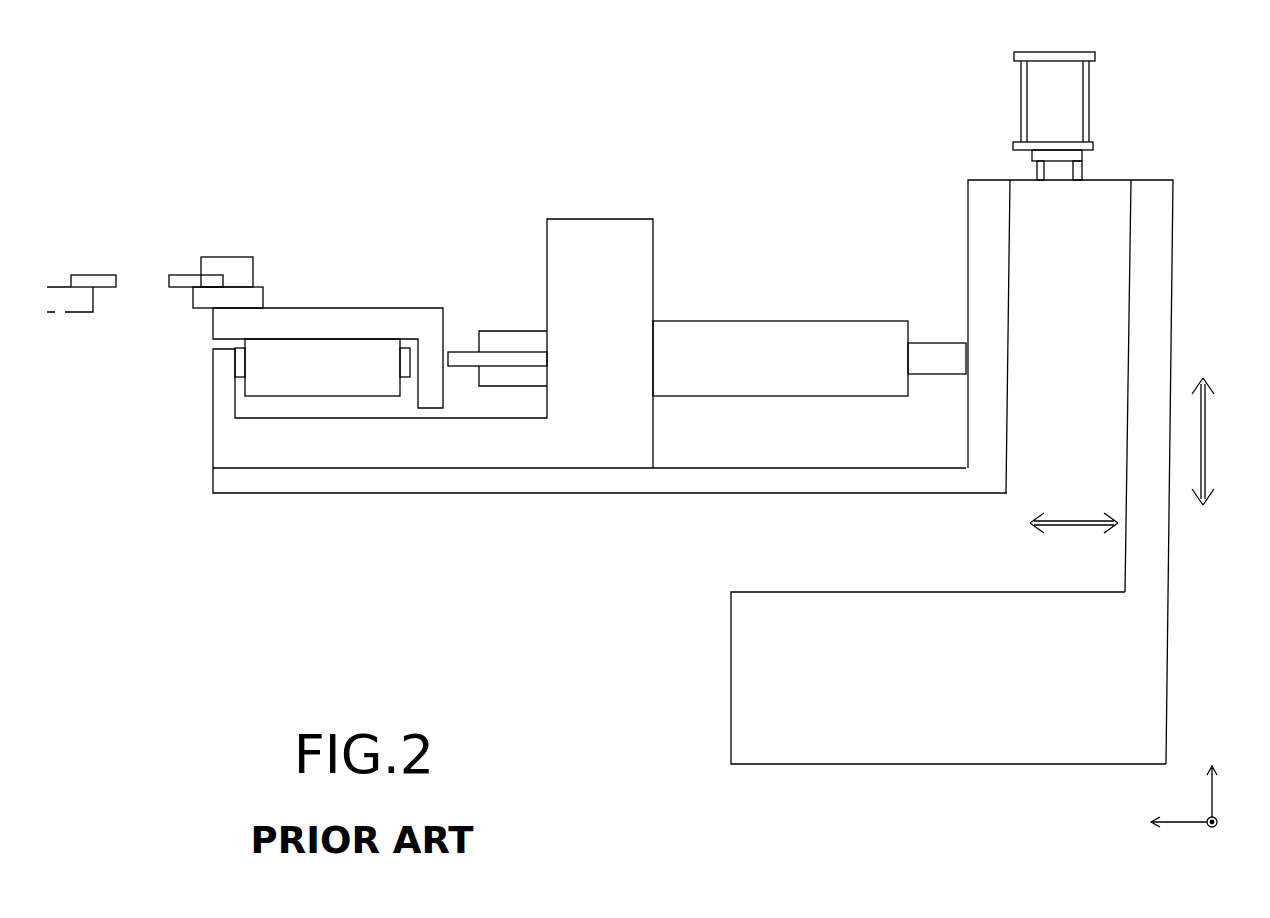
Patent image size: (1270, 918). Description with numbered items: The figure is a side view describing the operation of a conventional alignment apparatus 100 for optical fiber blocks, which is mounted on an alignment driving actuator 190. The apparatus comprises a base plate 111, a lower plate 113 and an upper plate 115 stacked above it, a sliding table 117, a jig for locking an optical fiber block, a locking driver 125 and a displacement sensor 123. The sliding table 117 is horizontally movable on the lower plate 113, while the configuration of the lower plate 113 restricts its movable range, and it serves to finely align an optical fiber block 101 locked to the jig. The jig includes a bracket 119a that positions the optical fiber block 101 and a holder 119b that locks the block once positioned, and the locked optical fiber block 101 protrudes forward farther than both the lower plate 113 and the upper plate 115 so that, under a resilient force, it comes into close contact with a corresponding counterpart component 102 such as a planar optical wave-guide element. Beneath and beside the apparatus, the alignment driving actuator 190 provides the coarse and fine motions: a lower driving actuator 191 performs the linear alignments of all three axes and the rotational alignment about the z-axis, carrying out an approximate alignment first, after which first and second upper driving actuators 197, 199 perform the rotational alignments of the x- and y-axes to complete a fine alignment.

The alignment apparatus 100 is at (489, 147).
The optical fiber block 101 is at (190, 278).
The counterpart component 102 is at (83, 278).
The base plate 111 is at (635, 483).
The lower plate 113 is at (410, 442).
The upper plate 115 is at (392, 325).
The sliding table 117 is at (280, 378).
The bracket 119a is at (205, 300).
The holder 119b is at (237, 273).
The displacement sensor 123 is at (507, 340).
The locking driver 125 is at (803, 348).
The alignment driving actuator 190 is at (1194, 260).
The lower driving actuator 191 is at (745, 661).
The first upper driving actuator 197 is at (1040, 93).
The second upper driving actuator 199 is at (1108, 203).